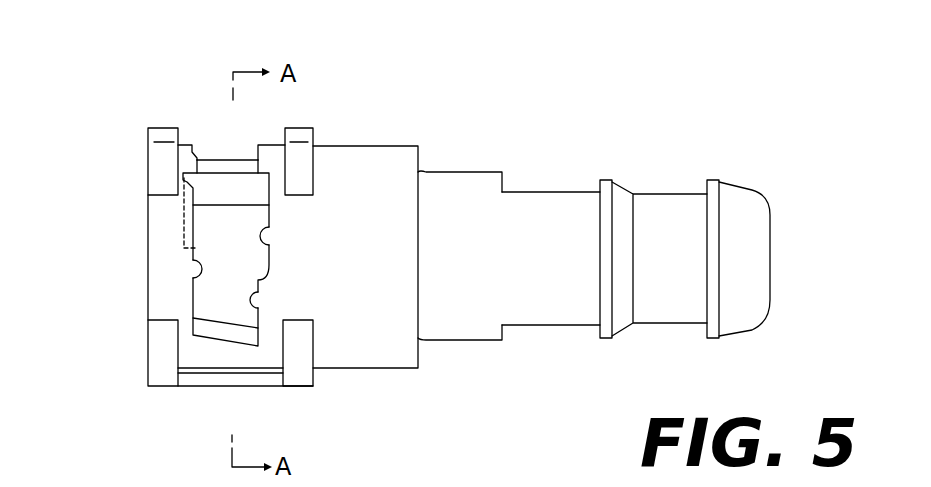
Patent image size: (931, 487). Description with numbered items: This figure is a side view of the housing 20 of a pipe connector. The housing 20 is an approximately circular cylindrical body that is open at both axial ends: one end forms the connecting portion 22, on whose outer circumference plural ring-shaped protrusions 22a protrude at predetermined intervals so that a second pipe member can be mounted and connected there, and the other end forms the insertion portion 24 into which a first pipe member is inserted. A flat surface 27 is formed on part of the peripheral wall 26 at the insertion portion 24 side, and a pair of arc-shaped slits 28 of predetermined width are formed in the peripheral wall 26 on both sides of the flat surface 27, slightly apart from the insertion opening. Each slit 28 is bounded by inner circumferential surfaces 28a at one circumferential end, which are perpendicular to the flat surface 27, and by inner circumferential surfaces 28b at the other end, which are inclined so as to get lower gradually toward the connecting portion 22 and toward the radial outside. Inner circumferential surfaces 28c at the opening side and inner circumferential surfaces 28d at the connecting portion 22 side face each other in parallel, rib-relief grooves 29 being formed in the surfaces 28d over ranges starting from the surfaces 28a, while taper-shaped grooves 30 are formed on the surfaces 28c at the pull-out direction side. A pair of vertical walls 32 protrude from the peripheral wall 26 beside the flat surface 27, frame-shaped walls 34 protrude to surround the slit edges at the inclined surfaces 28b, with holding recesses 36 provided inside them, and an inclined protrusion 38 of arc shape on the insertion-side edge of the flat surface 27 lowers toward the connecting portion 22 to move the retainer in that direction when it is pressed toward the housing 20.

The housing 20 is at (350, 136).
The connecting portion 22 is at (553, 318).
The ring-shaped protrusions 22a is at (620, 190).
The insertion portion 24 is at (136, 167).
The peripheral wall 26 is at (356, 370).
The flat surface 27 is at (215, 160).
The slits 28 is at (212, 283).
The inner circumferential surfaces 28a is at (235, 178).
The inner circumferential surfaces 28b is at (222, 330).
The inner circumferential surfaces 28c is at (195, 272).
The inner circumferential surfaces 28d is at (262, 301).
The rib-relief grooves 29 is at (264, 230).
The grooves 30 is at (183, 230).
The vertical walls 32 is at (160, 128).
The frame-shaped walls 34 is at (160, 388).
The holding recesses 36 is at (267, 362).
The inclined protrusion 38 is at (200, 158).